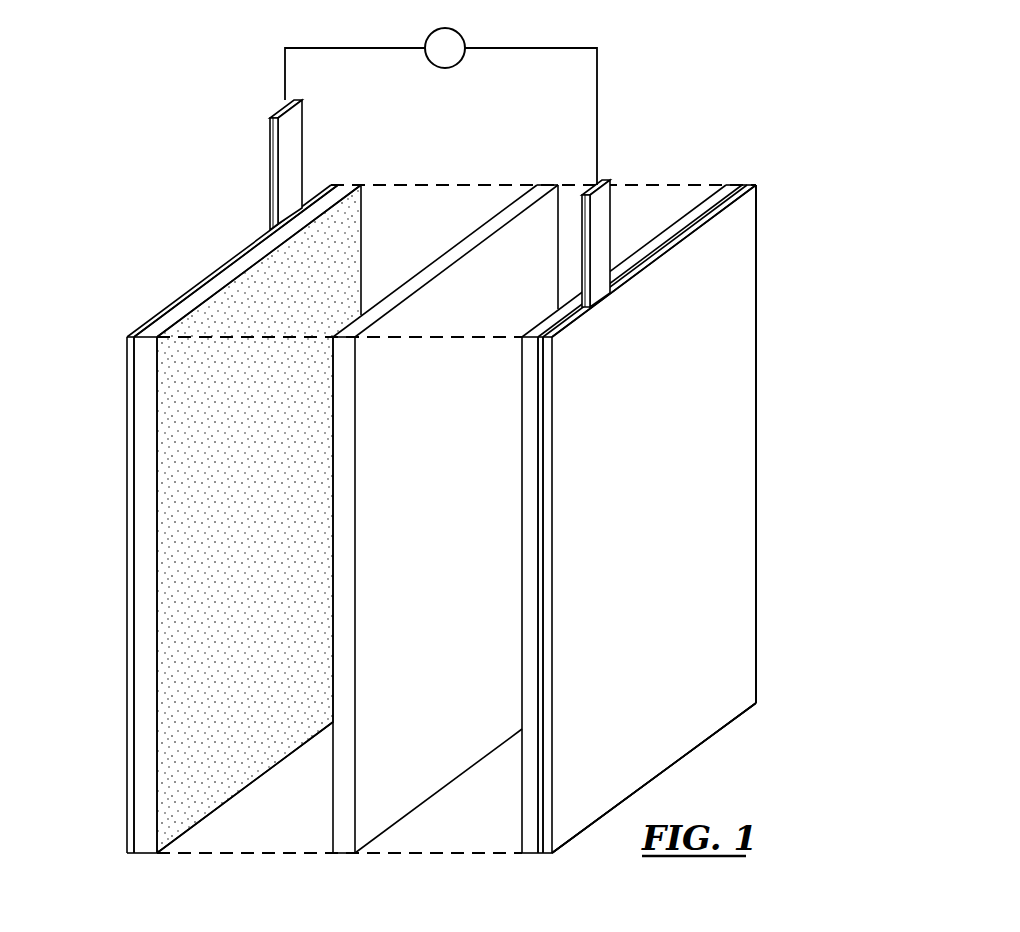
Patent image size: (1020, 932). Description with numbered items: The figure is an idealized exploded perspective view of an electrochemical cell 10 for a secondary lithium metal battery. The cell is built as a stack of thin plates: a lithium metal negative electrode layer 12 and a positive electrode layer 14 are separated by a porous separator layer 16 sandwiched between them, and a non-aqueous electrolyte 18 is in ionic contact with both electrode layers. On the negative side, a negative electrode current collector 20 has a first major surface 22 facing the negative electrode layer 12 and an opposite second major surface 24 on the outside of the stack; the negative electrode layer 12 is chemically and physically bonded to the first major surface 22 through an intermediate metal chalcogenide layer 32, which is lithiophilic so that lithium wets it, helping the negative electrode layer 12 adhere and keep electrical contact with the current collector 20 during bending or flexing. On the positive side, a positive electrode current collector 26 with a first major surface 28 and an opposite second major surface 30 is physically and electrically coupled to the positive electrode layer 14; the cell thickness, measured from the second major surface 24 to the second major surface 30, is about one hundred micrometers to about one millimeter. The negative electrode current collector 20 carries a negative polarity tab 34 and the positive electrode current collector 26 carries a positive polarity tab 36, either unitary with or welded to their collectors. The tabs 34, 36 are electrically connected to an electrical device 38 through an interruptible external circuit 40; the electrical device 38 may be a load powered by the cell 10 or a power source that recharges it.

The electrochemical cell 10 is at (131, 215).
The lithium metal negative electrode layer 12 is at (705, 200).
The positive electrode layer 14 is at (363, 263).
The porous separator layer 16 is at (330, 835).
The non-aqueous electrolyte 18 is at (246, 843).
The negative electrode current collector 20 is at (756, 285).
The first major surface 22 is at (541, 598).
The second major surface 24 is at (735, 465).
The positive electrode current collector 26 is at (127, 373).
The first major surface 28 is at (135, 597).
The second major surface 30 is at (127, 493).
The metal chalcogenide layer 32 is at (541, 853).
The negative polarity tab 34 is at (582, 227).
The positive polarity tab 36 is at (270, 175).
The electrical device 38 is at (447, 68).
The interruptible external circuit 40 is at (597, 78).